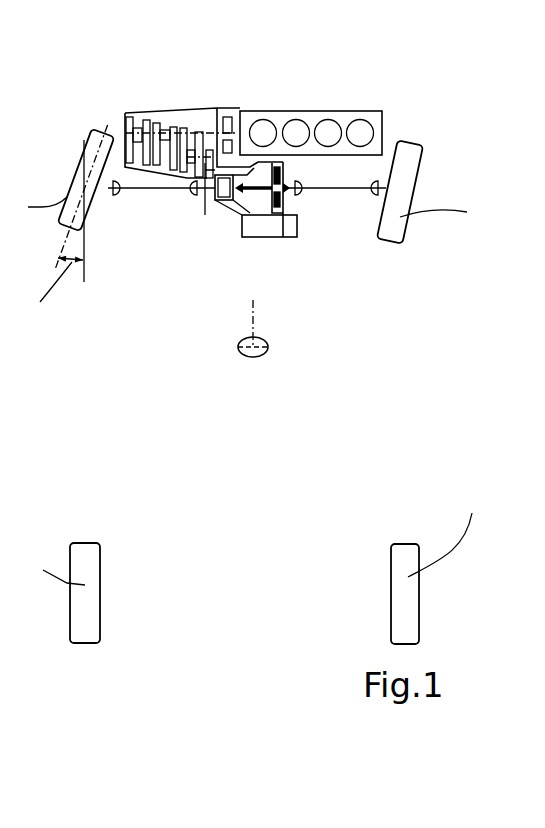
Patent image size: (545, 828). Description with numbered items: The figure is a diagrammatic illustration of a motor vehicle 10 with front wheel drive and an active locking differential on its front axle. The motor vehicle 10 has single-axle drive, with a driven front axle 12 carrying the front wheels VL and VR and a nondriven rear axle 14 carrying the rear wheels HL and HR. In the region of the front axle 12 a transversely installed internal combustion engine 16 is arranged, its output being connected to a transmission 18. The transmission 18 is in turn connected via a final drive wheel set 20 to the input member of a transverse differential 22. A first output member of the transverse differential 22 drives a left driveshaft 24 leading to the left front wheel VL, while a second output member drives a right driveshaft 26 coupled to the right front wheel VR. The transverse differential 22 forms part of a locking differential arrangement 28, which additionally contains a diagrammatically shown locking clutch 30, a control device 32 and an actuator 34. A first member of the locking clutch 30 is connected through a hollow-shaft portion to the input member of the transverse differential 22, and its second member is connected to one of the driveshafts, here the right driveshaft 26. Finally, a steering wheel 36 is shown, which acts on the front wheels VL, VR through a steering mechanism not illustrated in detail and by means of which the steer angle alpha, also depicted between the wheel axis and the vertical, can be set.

The motor vehicle 10 is at (460, 72).
The front axle 12 is at (50, 171).
The rear axle 14 is at (53, 635).
The engine 16 is at (315, 117).
The transmission 18 is at (198, 117).
The final drive wheel set 20 is at (202, 200).
The transverse differential 22 is at (215, 213).
The left driveshaft 24 is at (132, 193).
The right driveshaft 26 is at (348, 190).
The locking differential arrangement 28 is at (188, 244).
The locking clutch 30 is at (281, 178).
The control device 32 is at (287, 228).
The actuator 34 is at (256, 225).
The steering wheel 36 is at (263, 357).